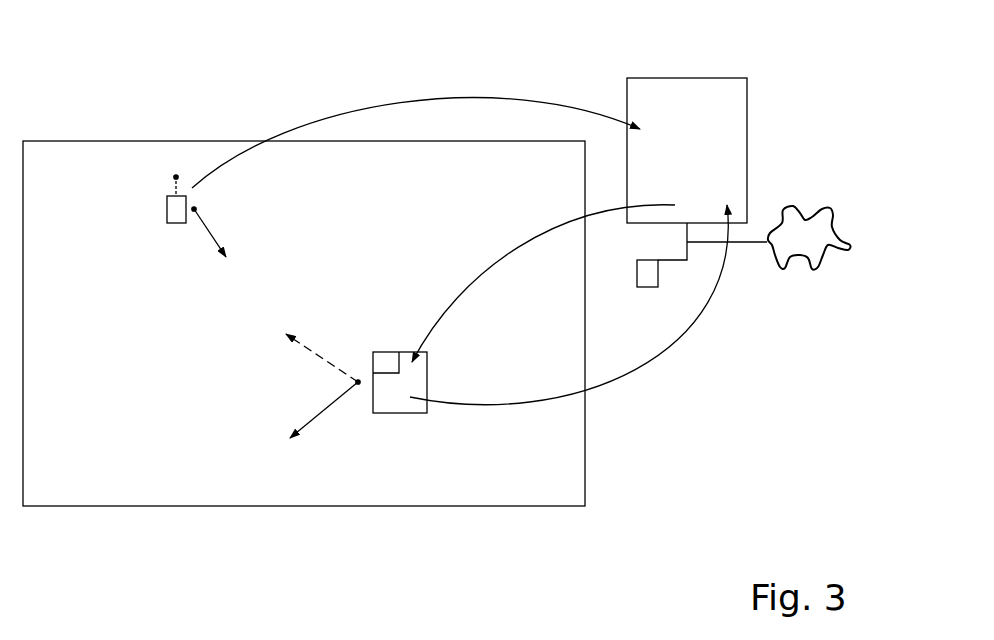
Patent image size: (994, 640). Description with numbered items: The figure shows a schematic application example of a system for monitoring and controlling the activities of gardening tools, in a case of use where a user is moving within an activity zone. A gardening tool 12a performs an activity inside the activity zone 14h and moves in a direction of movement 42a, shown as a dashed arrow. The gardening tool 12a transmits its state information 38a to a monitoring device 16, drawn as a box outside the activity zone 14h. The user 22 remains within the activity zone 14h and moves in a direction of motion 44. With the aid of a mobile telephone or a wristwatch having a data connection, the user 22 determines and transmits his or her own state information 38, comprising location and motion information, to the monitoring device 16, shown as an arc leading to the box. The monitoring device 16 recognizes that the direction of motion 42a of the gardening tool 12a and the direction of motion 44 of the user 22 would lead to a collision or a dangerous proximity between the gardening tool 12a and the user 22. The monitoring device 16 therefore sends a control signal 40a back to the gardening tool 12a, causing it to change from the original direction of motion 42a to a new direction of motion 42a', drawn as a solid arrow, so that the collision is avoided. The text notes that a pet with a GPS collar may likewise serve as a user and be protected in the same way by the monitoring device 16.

The activity zone 14h is at (75, 507).
The user 22 is at (165, 212).
The direction of motion of the user 44 is at (218, 236).
The state information of the user 38 is at (443, 98).
The monitoring device 16 is at (748, 138).
The control signal 40a is at (500, 248).
The state information of the gardening tool 38a is at (653, 353).
The gardening tool 12a is at (398, 413).
The direction of movement of the gardening tool 42a is at (267, 359).
The new direction of motion 42a' is at (264, 412).